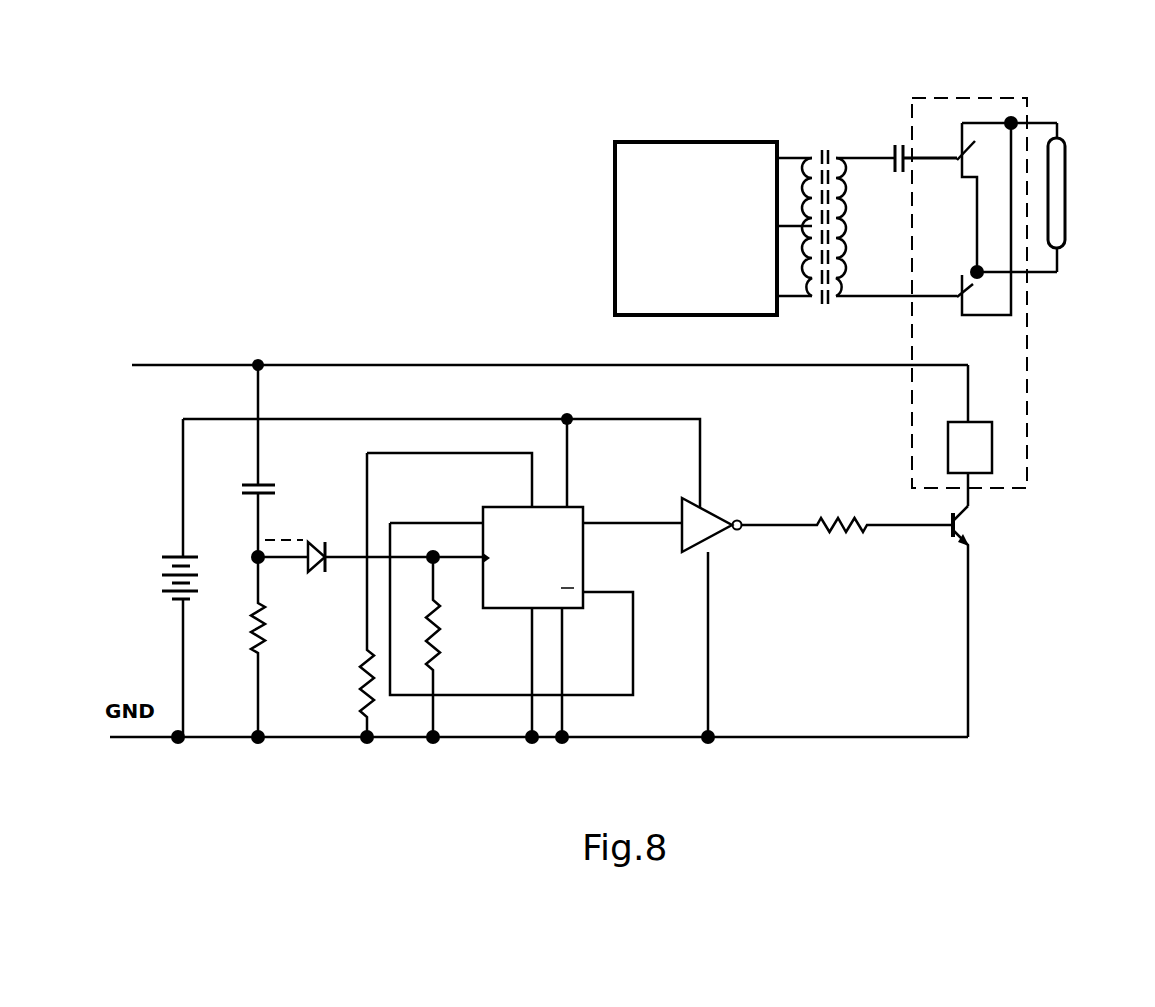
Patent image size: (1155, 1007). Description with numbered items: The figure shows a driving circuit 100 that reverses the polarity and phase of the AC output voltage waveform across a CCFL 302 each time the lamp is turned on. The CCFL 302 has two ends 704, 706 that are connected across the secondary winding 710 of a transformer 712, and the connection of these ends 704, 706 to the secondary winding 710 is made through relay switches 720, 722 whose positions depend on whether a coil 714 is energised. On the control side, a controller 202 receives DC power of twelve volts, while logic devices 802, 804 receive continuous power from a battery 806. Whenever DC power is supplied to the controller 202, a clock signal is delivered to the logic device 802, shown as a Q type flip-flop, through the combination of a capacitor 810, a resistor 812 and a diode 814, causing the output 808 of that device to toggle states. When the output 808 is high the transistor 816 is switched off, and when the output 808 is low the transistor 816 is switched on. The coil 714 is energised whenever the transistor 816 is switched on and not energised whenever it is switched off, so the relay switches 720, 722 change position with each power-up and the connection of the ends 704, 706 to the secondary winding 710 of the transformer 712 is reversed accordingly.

The driving circuit 100 is at (550, 105).
The controller 202 is at (465, 298).
The transformer 712 is at (821, 135).
The secondary winding 710 is at (860, 217).
The relay switch 720 is at (983, 82).
The relay switch 722 is at (978, 322).
The end of the CCFL 704 is at (1059, 95).
The end of the CCFL 706 is at (1064, 272).
The CCFL 302 is at (1065, 145).
The coil 714 is at (947, 450).
The battery 806 is at (168, 525).
The capacitor 810 is at (242, 488).
The resistor 812 is at (248, 637).
The diode 814 is at (305, 565).
The logic device 802 is at (583, 552).
The output 808 is at (630, 522).
The logic device 804 is at (740, 530).
The transistor 816 is at (950, 542).